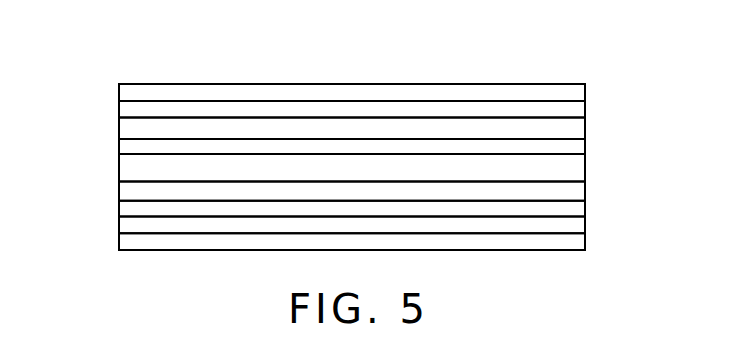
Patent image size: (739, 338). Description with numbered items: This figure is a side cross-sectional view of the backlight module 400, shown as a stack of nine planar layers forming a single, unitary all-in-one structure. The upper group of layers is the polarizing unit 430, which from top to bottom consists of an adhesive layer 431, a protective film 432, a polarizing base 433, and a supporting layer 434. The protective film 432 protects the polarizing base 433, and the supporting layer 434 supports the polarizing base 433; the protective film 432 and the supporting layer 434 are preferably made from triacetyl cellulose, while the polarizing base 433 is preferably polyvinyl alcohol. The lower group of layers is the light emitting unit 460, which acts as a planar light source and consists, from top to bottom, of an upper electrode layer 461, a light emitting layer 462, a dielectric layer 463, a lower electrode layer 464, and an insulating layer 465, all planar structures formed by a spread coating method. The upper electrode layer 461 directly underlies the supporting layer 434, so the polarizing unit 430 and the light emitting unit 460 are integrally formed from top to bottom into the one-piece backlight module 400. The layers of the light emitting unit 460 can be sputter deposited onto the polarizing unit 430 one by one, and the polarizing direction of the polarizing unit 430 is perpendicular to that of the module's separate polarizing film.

The backlight module 400 is at (342, 59).
The polarizing unit 430 is at (591, 84).
The adhesive layer 431 is at (140, 92).
The protective film 432 is at (128, 110).
The polarizing base 433 is at (132, 130).
The supporting layer 434 is at (127, 147).
The light emitting unit 460 is at (591, 156).
The upper electrode layer 461 is at (128, 167).
The light emitting layer 462 is at (128, 192).
The dielectric layer 463 is at (130, 207).
The lower electrode layer 464 is at (128, 224).
The insulating layer 465 is at (125, 240).